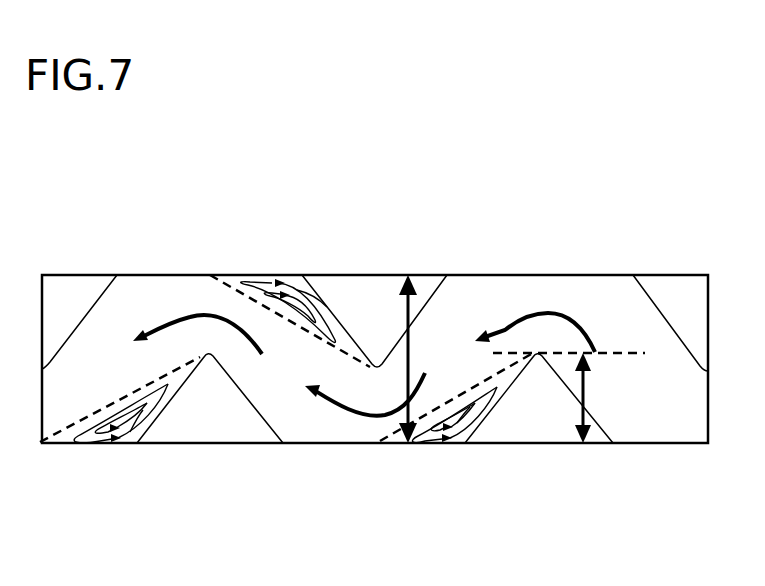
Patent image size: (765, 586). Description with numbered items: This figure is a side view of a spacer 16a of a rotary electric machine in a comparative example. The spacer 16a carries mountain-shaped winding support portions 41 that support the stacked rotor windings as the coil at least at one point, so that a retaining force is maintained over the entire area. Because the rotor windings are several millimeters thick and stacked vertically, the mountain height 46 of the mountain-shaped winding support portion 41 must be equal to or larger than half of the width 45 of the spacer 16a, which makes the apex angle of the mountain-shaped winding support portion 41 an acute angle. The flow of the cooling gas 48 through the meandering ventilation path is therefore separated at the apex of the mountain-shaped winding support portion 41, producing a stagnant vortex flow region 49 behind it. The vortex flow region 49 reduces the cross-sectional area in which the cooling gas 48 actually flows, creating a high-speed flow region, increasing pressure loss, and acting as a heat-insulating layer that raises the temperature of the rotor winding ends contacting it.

The spacer 16a is at (607, 277).
The mountain-shaped winding support portion 41 is at (202, 424).
The width of the spacer 45 is at (412, 358).
The mountain height 46 is at (578, 404).
The cooling gas 48 is at (205, 316).
The vortex flow region 49 is at (106, 437).